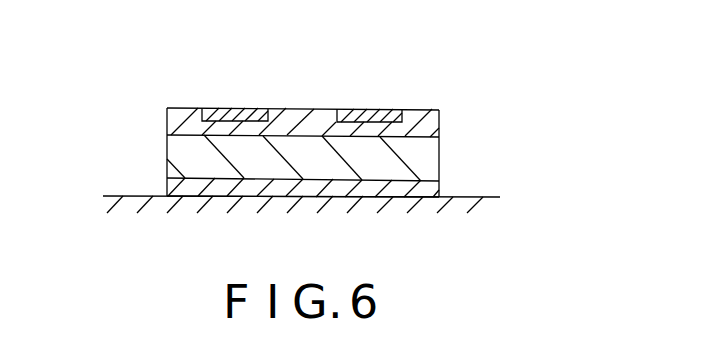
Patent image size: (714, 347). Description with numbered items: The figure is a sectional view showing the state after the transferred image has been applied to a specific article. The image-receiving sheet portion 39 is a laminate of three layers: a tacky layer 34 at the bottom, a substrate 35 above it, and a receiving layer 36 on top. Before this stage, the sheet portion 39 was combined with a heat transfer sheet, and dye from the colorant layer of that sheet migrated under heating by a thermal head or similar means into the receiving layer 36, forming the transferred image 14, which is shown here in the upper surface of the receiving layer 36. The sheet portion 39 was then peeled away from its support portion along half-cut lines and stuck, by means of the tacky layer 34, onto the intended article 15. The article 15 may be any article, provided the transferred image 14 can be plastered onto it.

The transferred image 14 is at (238, 118).
The article 15 is at (142, 202).
The tacky layer 34 is at (340, 175).
The substrate 35 is at (340, 150).
The receiving layer 36 is at (340, 110).
The image-receiving sheet portion 39 is at (523, 82).